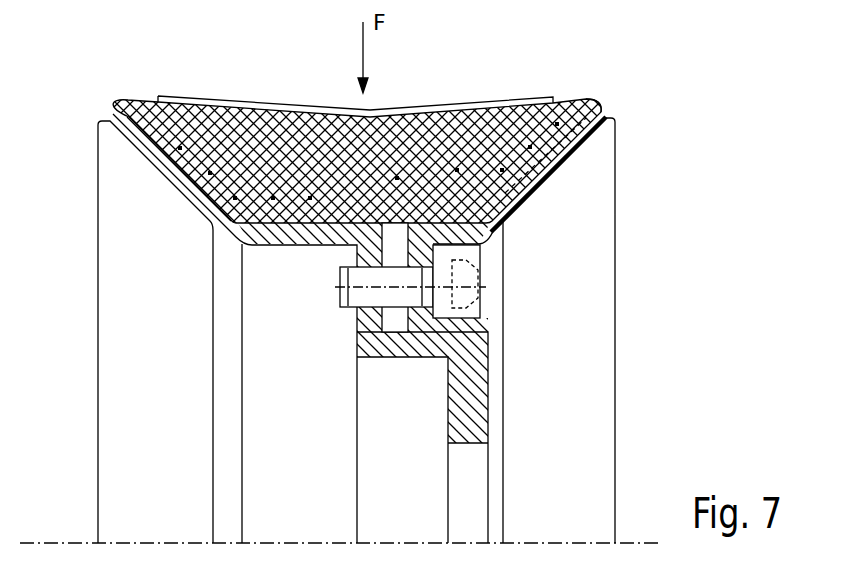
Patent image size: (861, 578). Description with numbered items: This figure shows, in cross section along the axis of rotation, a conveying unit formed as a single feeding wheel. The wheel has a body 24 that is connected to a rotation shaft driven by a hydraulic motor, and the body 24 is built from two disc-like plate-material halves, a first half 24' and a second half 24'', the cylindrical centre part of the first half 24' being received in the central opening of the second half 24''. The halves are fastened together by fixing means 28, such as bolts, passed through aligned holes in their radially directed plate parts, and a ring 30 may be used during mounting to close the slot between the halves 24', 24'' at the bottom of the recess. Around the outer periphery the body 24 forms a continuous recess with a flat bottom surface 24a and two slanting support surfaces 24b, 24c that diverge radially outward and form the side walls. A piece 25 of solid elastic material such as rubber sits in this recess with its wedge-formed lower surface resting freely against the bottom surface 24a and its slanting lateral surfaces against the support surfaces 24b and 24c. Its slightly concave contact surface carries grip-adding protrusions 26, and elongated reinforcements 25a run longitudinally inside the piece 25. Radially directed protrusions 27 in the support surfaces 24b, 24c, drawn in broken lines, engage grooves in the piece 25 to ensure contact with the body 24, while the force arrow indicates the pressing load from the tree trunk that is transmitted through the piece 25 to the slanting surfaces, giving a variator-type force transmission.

The body 24 is at (381, 440).
The first half 24' is at (123, 332).
The second half 24'' is at (601, 330).
The bottom surface 24a is at (327, 190).
The slanting support surface 24b is at (180, 148).
The slanting support surface 24c is at (583, 98).
The piece of elastic material 25 is at (380, 157).
The elongated reinforcements 25a is at (212, 172).
The protrusions 26 is at (312, 117).
The radially directed protrusions 27 is at (513, 190).
The fixing means 28 is at (478, 262).
The ring 30 is at (422, 190).